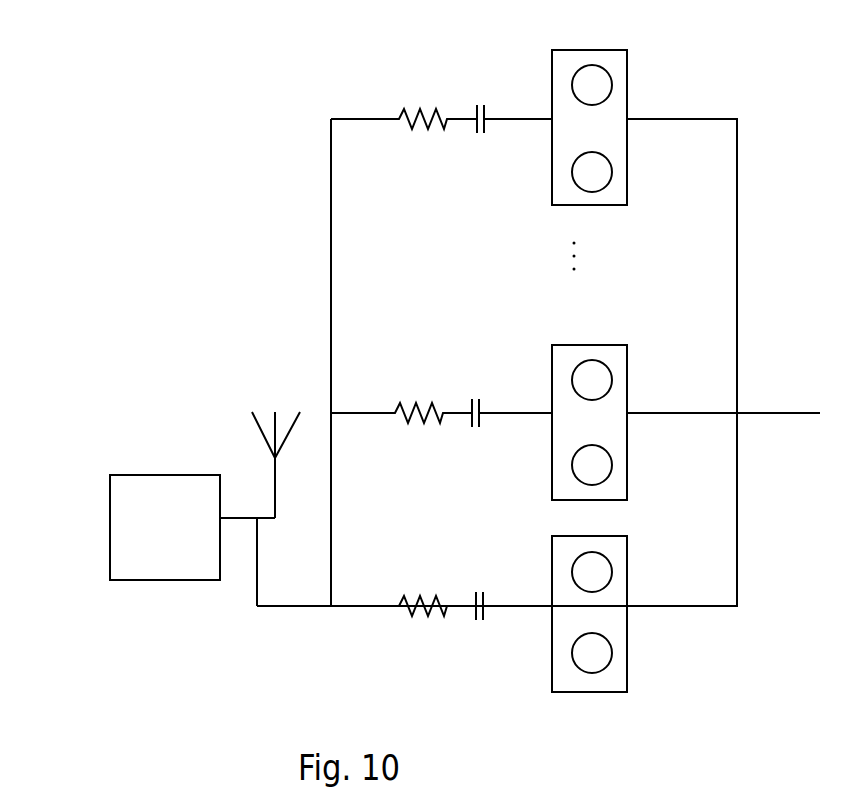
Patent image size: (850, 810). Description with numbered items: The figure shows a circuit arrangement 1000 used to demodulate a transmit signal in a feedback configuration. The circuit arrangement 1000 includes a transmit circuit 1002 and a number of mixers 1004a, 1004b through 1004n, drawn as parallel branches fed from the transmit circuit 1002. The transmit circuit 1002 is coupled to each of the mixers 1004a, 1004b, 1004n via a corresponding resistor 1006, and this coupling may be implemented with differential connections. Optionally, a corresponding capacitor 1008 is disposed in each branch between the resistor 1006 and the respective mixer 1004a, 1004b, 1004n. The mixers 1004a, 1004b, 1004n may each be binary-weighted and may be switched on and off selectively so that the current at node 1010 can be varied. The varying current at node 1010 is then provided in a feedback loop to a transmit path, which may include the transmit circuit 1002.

The circuit arrangement 1000 is at (793, 130).
The transmit circuit 1002 is at (161, 444).
The mixer 1004n is at (618, 38).
The mixer 1004b is at (617, 336).
The mixer 1004a is at (617, 532).
The resistor 1006 is at (404, 97).
The capacitor 1008 is at (479, 96).
The node 1010 is at (747, 398).